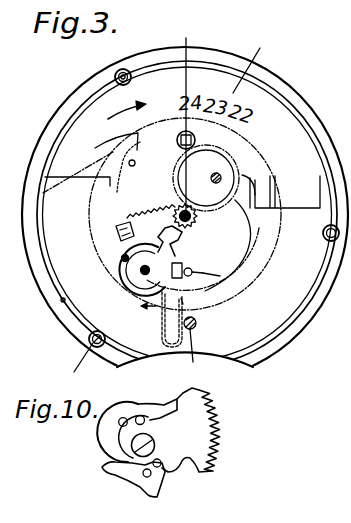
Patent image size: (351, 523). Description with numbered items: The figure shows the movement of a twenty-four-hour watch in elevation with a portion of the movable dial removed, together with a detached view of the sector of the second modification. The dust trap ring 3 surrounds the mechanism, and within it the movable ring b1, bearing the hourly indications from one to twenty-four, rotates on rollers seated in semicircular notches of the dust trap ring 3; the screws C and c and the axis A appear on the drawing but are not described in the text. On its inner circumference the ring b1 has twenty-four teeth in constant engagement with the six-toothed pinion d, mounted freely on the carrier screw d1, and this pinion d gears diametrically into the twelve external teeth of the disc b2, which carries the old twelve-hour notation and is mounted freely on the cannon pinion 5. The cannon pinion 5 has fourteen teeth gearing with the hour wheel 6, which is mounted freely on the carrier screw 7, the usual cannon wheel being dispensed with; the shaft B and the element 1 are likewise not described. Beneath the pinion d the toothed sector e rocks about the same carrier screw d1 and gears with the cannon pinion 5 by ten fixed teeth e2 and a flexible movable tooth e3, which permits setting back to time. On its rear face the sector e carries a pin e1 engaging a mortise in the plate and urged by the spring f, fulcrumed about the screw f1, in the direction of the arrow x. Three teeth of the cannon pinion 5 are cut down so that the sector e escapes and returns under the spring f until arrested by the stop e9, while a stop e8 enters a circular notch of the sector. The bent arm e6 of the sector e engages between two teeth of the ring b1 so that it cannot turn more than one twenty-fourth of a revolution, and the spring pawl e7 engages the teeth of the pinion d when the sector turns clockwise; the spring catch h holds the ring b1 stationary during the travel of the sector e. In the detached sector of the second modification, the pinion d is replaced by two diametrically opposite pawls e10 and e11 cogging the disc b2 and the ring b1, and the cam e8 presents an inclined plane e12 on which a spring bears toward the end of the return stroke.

In FIG. 3, the dust trap ring 3 is at (66, 108).
In FIG. 3, the screws c is at (114, 74).
In FIG. 3, the case C is at (71, 359).
In FIG. 3, the axis A is at (191, 116).
In FIG. 3, the carrier screw 7 is at (242, 163).
In FIG. 3, the hour wheel 6 is at (222, 174).
In FIG. 3, the movable ring b1 is at (249, 60).
In FIG. 3, the cannon pinion 5 is at (178, 210).
In FIG. 3, the shaft B is at (204, 234).
In FIG. 3, the fixed teeth e2 is at (143, 208).
In FIG. 10, the fixed teeth e2 is at (203, 408).
In FIG. 3, the movable tooth e3 is at (143, 232).
In FIG. 3, the toothed sector e is at (150, 250).
In FIG. 10, the toothed sector e is at (196, 432).
In FIG. 3, the spring pawl e7 is at (122, 262).
In FIG. 3, the pinion d is at (125, 292).
In FIG. 3, the carrier screw d1 is at (120, 282).
In FIG. 10, the carrier screw d1 is at (131, 445).
In FIG. 3, the plate 1 is at (77, 268).
In FIG. 3, the arrow x is at (139, 305).
In FIG. 3, the spring f is at (162, 318).
In FIG. 3, the screw f1 is at (196, 349).
In FIG. 3, the perpendicular pin e1 is at (186, 306).
In FIG. 3, the bent arm e6 is at (190, 277).
In FIG. 3, the stop e9 is at (214, 283).
In FIG. 3, the disc b2 is at (253, 252).
In FIG. 3, the spring catch h is at (130, 157).
In FIG. 10, the pawl e10 is at (157, 404).
In FIG. 10, the pawl e11 is at (108, 465).
In FIG. 10, the inclined plane e12 is at (137, 493).
In FIG. 10, the stop e8 is at (160, 493).